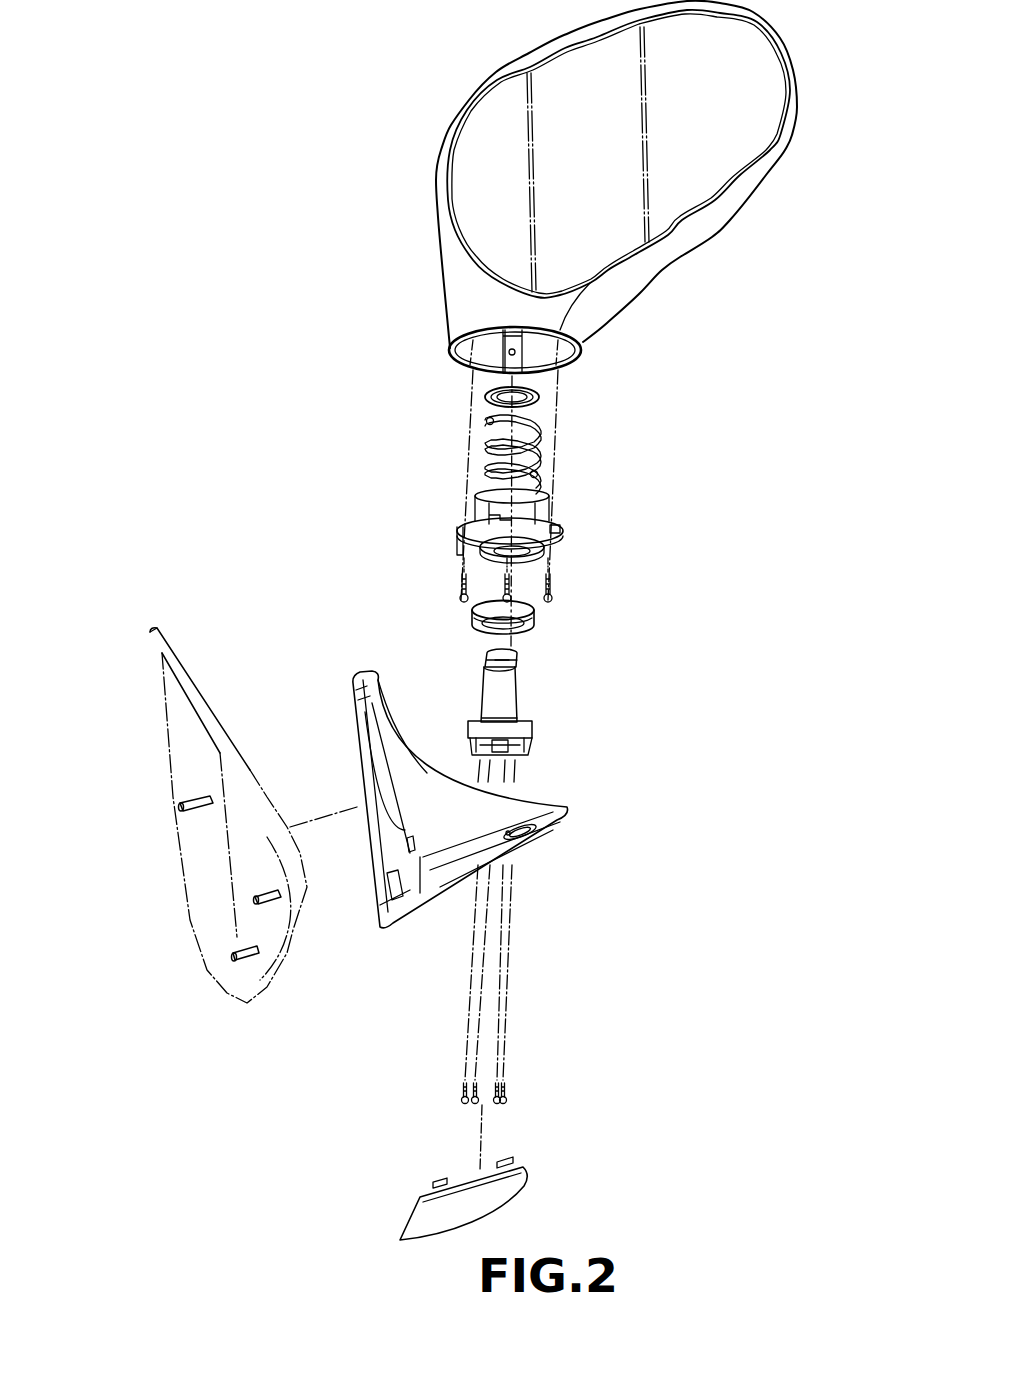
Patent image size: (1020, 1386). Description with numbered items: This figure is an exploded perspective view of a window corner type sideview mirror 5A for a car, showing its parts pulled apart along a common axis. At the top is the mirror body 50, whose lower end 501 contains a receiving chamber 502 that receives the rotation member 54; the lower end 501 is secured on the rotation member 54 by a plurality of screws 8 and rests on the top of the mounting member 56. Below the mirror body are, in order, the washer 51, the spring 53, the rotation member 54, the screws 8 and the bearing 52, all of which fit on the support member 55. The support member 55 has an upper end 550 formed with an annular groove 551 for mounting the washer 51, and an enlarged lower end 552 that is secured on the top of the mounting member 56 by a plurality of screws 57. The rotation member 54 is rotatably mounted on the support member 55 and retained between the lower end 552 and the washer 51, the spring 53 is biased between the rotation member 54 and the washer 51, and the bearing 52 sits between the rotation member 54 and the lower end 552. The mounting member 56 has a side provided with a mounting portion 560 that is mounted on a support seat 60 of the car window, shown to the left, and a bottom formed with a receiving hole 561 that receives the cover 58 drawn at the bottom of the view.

The mirror body 50 is at (447, 252).
The lower end of the mirror body 501 is at (450, 349).
The receiving chamber 502 is at (473, 362).
The washer 51 is at (539, 397).
The spring 53 is at (541, 455).
The rotation member 54 is at (564, 533).
The screws 8 is at (461, 586).
The window corner type sideview mirror 5A is at (712, 600).
The bearing 52 is at (535, 620).
The support member 55 is at (510, 690).
The upper end of the support member 550 is at (518, 657).
The annular groove 551 is at (487, 664).
The enlarged lower end of the support member 552 is at (533, 734).
The mounting member 56 is at (471, 799).
The mounting portion 560 is at (357, 750).
The receiving hole 561 is at (521, 855).
The support seat 60 is at (163, 733).
The screws 57 is at (506, 1093).
The cover 58 is at (525, 1172).